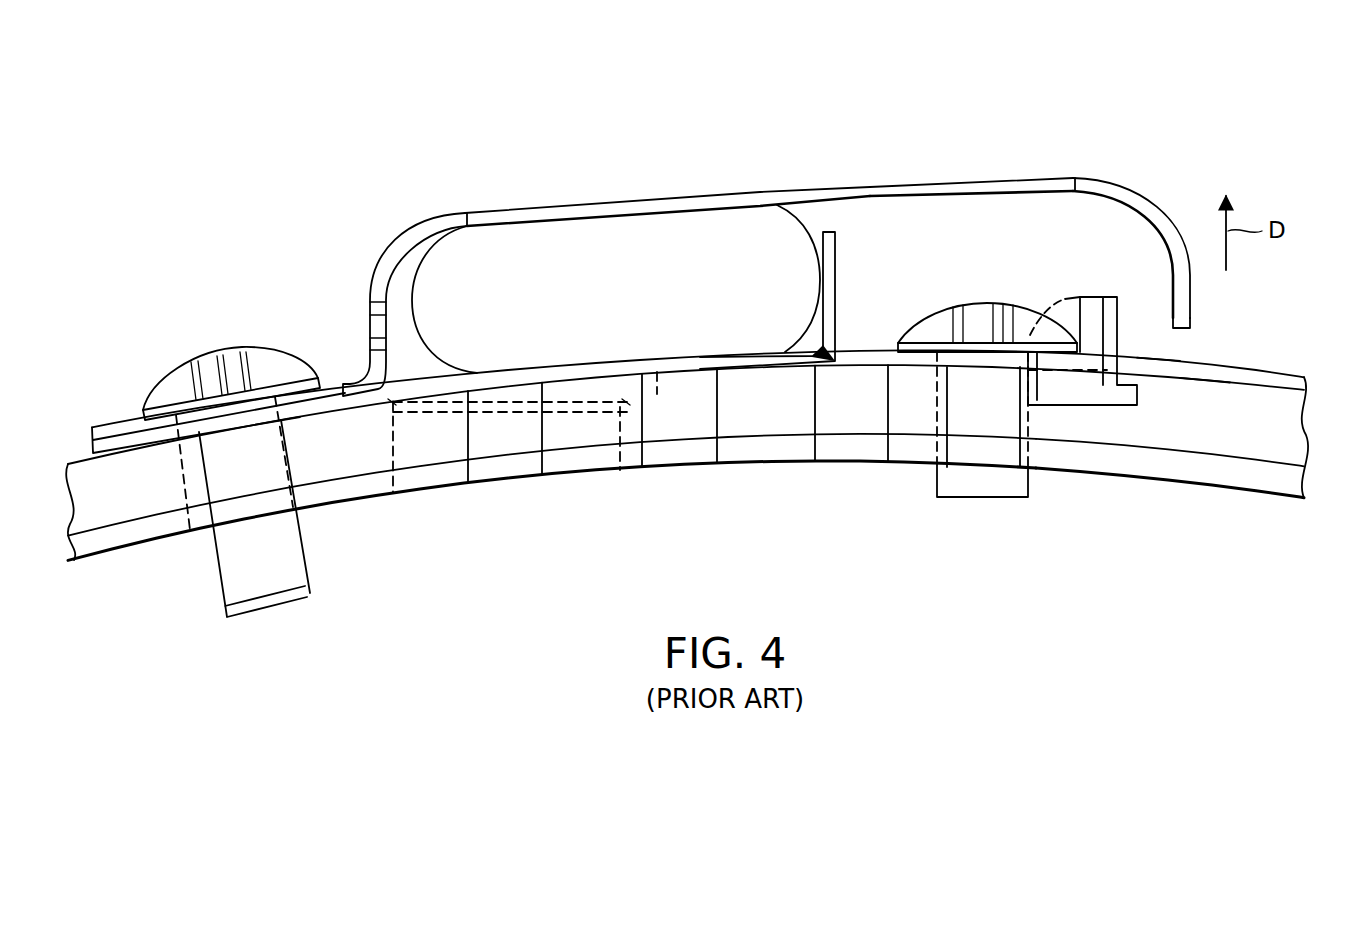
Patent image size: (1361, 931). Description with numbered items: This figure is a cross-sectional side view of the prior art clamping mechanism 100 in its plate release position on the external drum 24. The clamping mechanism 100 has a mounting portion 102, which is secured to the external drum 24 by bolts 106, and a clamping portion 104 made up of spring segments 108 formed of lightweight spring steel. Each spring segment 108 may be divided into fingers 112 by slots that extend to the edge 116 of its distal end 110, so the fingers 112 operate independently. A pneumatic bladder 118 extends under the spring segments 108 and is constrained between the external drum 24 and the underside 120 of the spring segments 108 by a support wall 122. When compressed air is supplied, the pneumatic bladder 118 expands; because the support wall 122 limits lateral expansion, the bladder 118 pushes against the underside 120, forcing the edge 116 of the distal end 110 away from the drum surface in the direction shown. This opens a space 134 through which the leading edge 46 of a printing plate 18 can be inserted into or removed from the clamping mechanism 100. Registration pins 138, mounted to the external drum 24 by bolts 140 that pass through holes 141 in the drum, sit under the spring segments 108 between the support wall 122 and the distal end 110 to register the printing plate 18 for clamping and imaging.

The printing plate 18 is at (1300, 381).
The external drum 24 is at (76, 463).
The leading edge 46 is at (1203, 380).
The clamping mechanism 100 is at (667, 259).
The mounting portion 102 is at (113, 425).
The clamping portion 104 is at (688, 118).
The bolts 106 is at (177, 366).
The spring segments 108 is at (934, 180).
The distal end 110 is at (1192, 295).
The fingers 112 is at (797, 194).
The edge 116 is at (1182, 329).
The pneumatic bladder 118 is at (770, 178).
The underside 120 is at (522, 228).
The support wall 122 is at (838, 250).
The space 134 is at (1168, 352).
The registration pins 138 is at (1082, 296).
The bolts 140 is at (955, 310).
The holes 141 is at (935, 425).